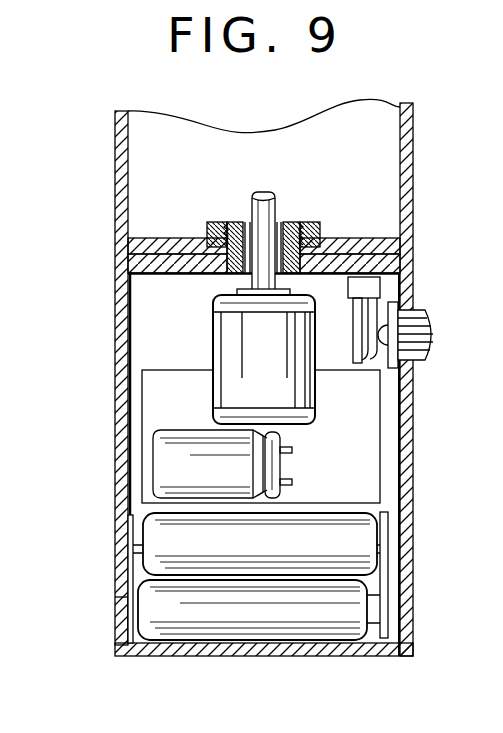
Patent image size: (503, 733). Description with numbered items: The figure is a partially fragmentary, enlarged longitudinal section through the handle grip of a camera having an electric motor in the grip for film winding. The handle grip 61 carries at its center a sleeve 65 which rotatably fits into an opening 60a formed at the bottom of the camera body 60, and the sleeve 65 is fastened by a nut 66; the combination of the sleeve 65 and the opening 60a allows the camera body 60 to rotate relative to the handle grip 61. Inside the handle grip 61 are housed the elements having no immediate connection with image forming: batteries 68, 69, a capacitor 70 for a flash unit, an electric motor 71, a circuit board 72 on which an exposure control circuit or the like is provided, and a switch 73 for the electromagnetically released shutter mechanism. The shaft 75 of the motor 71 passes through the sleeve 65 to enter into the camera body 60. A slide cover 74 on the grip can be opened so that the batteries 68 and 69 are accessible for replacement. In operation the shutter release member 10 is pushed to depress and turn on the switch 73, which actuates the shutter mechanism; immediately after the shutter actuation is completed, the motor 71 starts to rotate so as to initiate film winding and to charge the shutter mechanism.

The shutter release member 10 is at (412, 340).
The camera body 60 is at (414, 167).
The opening 60a is at (200, 244).
The handle grip 61 is at (114, 338).
The sleeve 65 is at (292, 243).
The nut 66 is at (220, 222).
The battery 68 is at (130, 545).
The battery 69 is at (283, 612).
The capacitor 70 is at (180, 462).
The electric motor 71 is at (240, 338).
The circuit board 72 is at (348, 472).
The switch 73 is at (378, 313).
The slide cover 74 is at (118, 592).
The shaft 75 is at (270, 206).